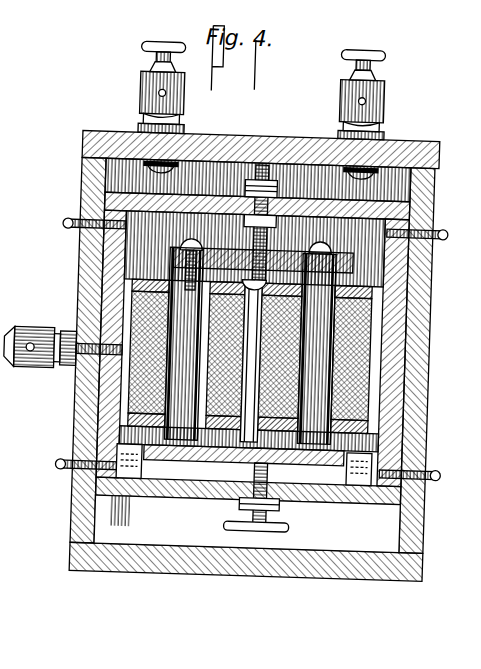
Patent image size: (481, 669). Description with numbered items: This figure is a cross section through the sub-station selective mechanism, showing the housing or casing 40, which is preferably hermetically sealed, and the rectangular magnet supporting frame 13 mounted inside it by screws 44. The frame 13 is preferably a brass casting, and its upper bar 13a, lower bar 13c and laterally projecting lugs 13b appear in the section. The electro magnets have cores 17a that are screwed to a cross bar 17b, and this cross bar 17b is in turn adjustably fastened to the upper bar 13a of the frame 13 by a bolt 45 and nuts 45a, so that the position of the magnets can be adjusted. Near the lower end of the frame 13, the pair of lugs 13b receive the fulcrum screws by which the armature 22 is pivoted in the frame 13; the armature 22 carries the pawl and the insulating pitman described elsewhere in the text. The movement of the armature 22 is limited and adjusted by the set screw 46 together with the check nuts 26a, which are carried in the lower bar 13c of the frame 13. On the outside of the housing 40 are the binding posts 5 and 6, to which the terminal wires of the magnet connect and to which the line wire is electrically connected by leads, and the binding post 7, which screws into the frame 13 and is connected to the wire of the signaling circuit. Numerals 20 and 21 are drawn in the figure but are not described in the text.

The binding post 5 is at (132, 96).
The binding post 6 is at (376, 96).
The binding post 7 is at (26, 334).
The magnet supporting frame 13 is at (90, 265).
The upper bar 13a is at (298, 196).
The laterally projecting lugs 13b is at (352, 466).
The lower bar 13c is at (206, 500).
The cores 17a is at (324, 262).
The cross bar 17b is at (268, 252).
The coil 20 is at (304, 358).
The core 21 is at (359, 417).
The armature 22 is at (249, 356).
The check nuts 26a is at (284, 506).
The housing 40 is at (285, 120).
The screws 44 is at (66, 224).
The bolt 45 is at (250, 226).
The nuts 45a is at (240, 188).
The set screw 46 is at (280, 529).